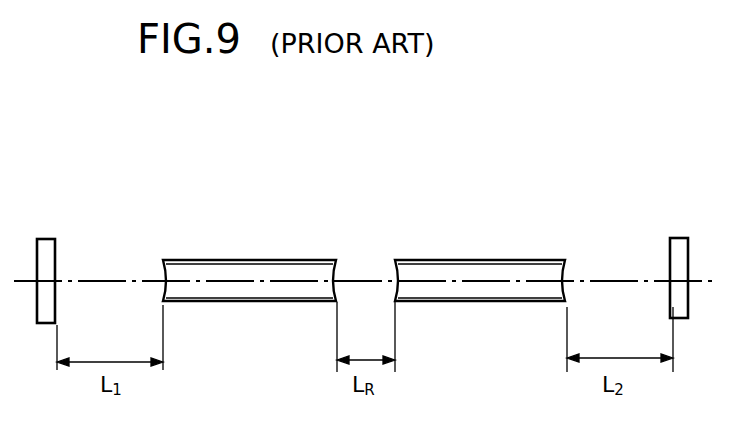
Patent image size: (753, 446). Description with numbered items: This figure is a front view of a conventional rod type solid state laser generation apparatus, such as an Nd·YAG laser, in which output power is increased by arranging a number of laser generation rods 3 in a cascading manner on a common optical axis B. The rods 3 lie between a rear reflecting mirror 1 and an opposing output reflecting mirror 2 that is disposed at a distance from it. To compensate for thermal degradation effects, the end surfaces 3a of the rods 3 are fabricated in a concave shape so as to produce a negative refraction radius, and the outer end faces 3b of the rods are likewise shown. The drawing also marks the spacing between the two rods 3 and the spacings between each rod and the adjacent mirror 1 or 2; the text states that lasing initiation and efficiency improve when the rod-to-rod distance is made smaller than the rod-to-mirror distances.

The rear reflecting mirror 1 is at (46, 238).
The output reflecting mirror 2 is at (680, 238).
The laser generation rod 3 is at (234, 260).
The end surface of rod 3a is at (396, 264).
The outer end face of rod lens 3b is at (163, 260).
The common optical axis B is at (360, 278).